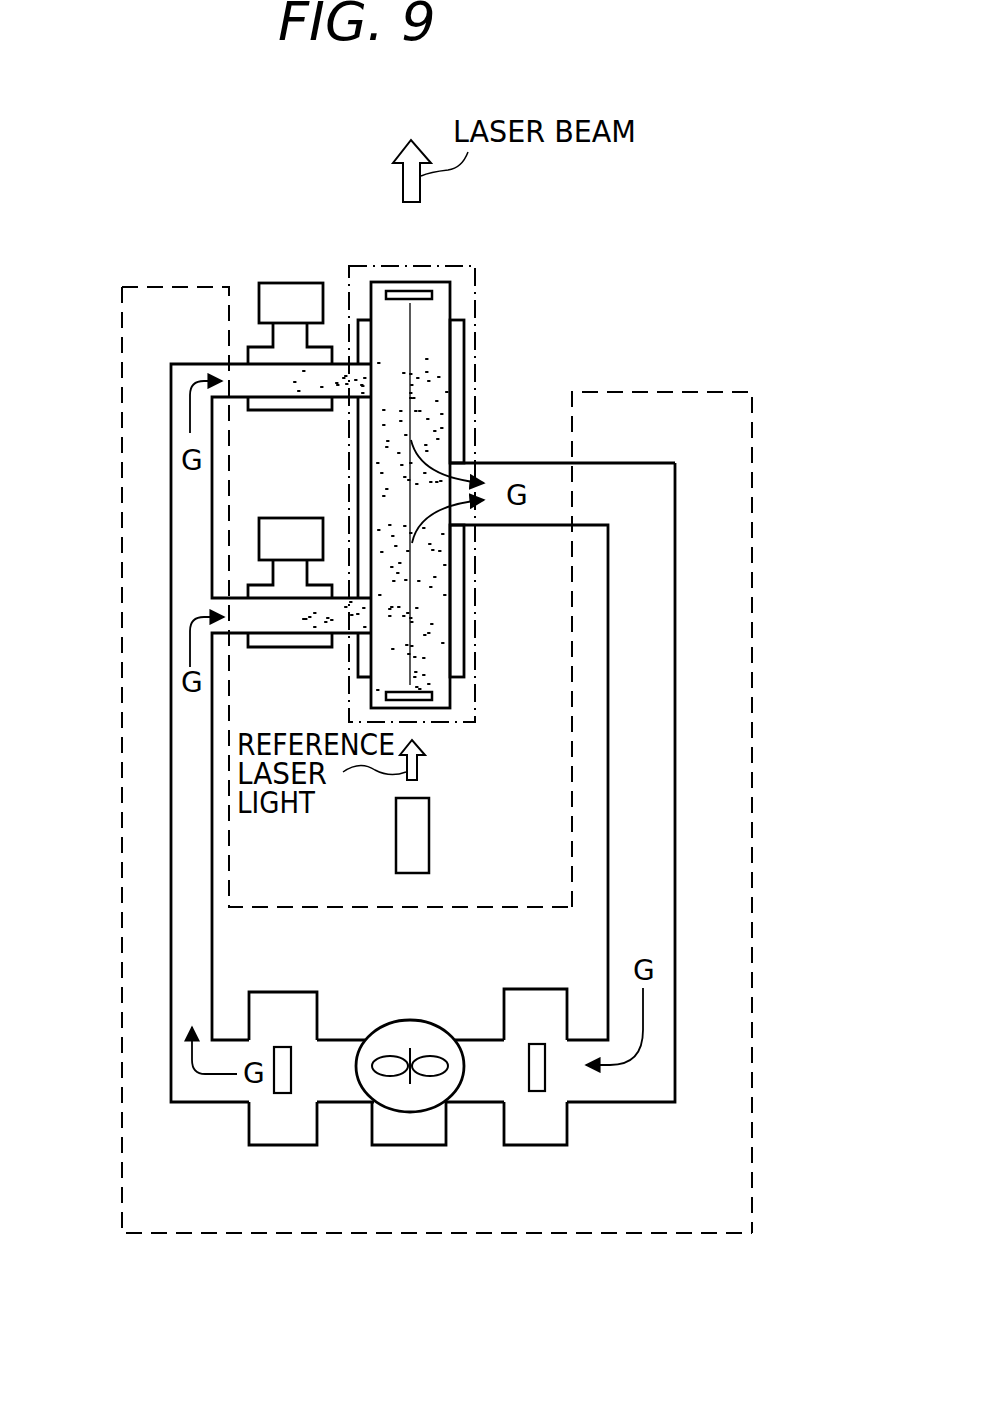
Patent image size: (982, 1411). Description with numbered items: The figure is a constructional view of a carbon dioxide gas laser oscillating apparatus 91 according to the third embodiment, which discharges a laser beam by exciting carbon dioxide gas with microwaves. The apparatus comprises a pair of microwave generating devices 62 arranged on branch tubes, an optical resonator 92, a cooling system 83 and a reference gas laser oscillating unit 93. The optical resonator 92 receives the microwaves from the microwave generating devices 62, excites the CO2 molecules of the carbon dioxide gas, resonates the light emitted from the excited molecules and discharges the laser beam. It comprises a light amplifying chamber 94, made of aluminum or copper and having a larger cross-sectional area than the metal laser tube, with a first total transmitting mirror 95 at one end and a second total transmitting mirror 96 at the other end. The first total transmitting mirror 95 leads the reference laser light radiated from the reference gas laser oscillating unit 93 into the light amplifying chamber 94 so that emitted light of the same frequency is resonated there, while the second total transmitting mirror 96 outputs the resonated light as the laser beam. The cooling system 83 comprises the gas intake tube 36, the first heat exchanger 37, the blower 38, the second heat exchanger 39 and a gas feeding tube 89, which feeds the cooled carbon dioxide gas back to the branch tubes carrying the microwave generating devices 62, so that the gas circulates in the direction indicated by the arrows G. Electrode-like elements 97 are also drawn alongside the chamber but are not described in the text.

The gas intake tube 36 is at (661, 738).
The first heat exchanger 37 is at (538, 1091).
The blower 38 is at (410, 1112).
The second heat exchanger 39 is at (284, 1093).
The microwave generating devices 62 is at (273, 283).
The cooling system 83 is at (752, 588).
The gas feeding tube 89 is at (180, 845).
The carbon dioxide gas laser oscillating apparatus 91 is at (168, 197).
The optical resonator 92 is at (477, 290).
The reference gas laser oscillating unit 93 is at (400, 847).
The light amplifying chamber 94 is at (440, 373).
The first total transmitting mirror 95 is at (432, 700).
The second total transmitting mirror 96 is at (423, 289).
The discharge electrodes 97 is at (455, 422).